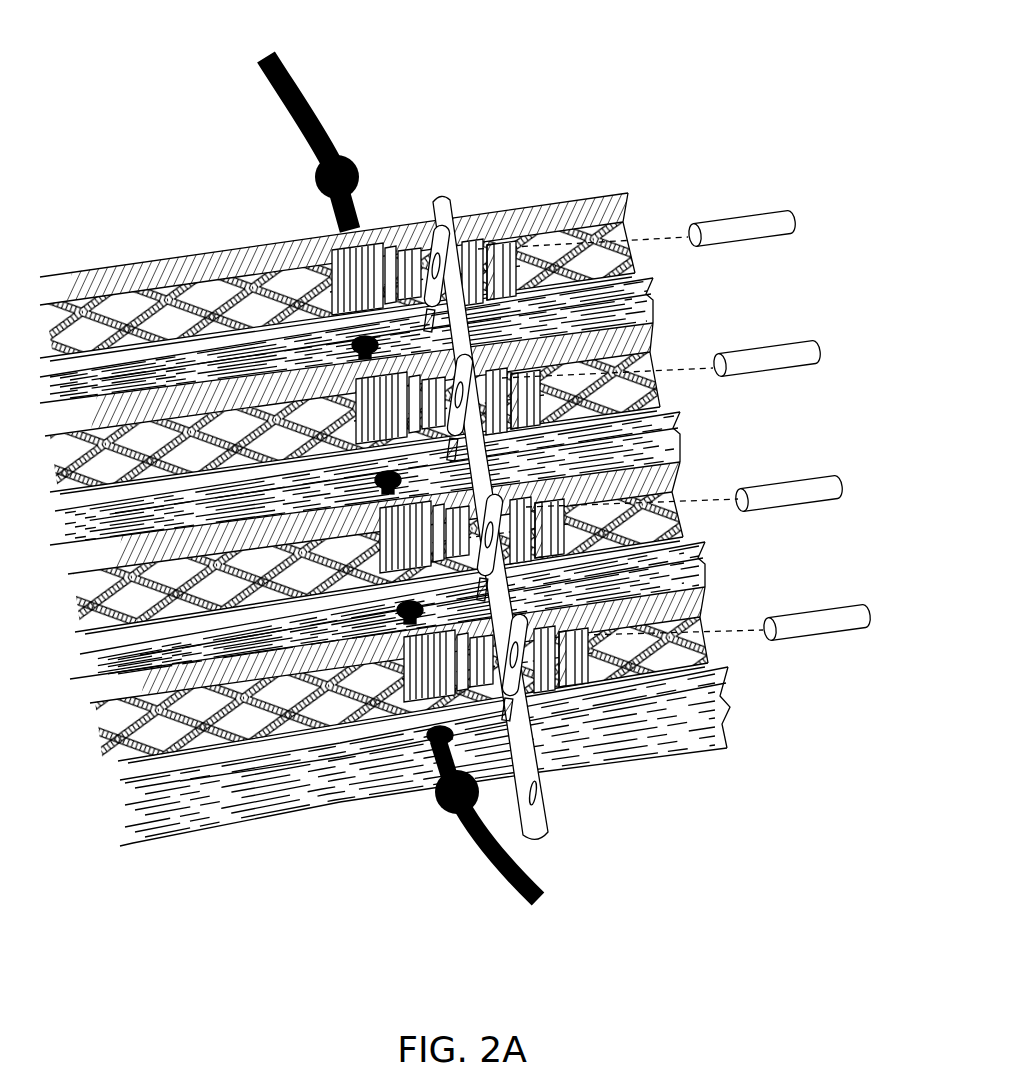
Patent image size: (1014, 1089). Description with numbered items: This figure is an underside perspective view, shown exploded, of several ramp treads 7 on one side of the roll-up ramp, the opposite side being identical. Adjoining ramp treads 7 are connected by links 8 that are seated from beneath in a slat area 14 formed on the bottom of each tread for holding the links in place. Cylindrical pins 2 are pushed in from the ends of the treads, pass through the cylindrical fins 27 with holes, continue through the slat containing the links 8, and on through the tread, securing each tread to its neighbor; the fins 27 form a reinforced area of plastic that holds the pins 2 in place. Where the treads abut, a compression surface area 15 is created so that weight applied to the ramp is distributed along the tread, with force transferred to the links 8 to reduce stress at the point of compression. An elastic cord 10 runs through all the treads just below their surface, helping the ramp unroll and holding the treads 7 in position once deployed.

The pin 2 is at (814, 630).
The ramp tread 7 is at (385, 556).
The link 8 is at (443, 222).
The elastic cord 10 is at (508, 880).
The slat area 14 is at (580, 655).
The compression surface area 15 is at (362, 752).
The cylindrical fin 27 is at (507, 240).